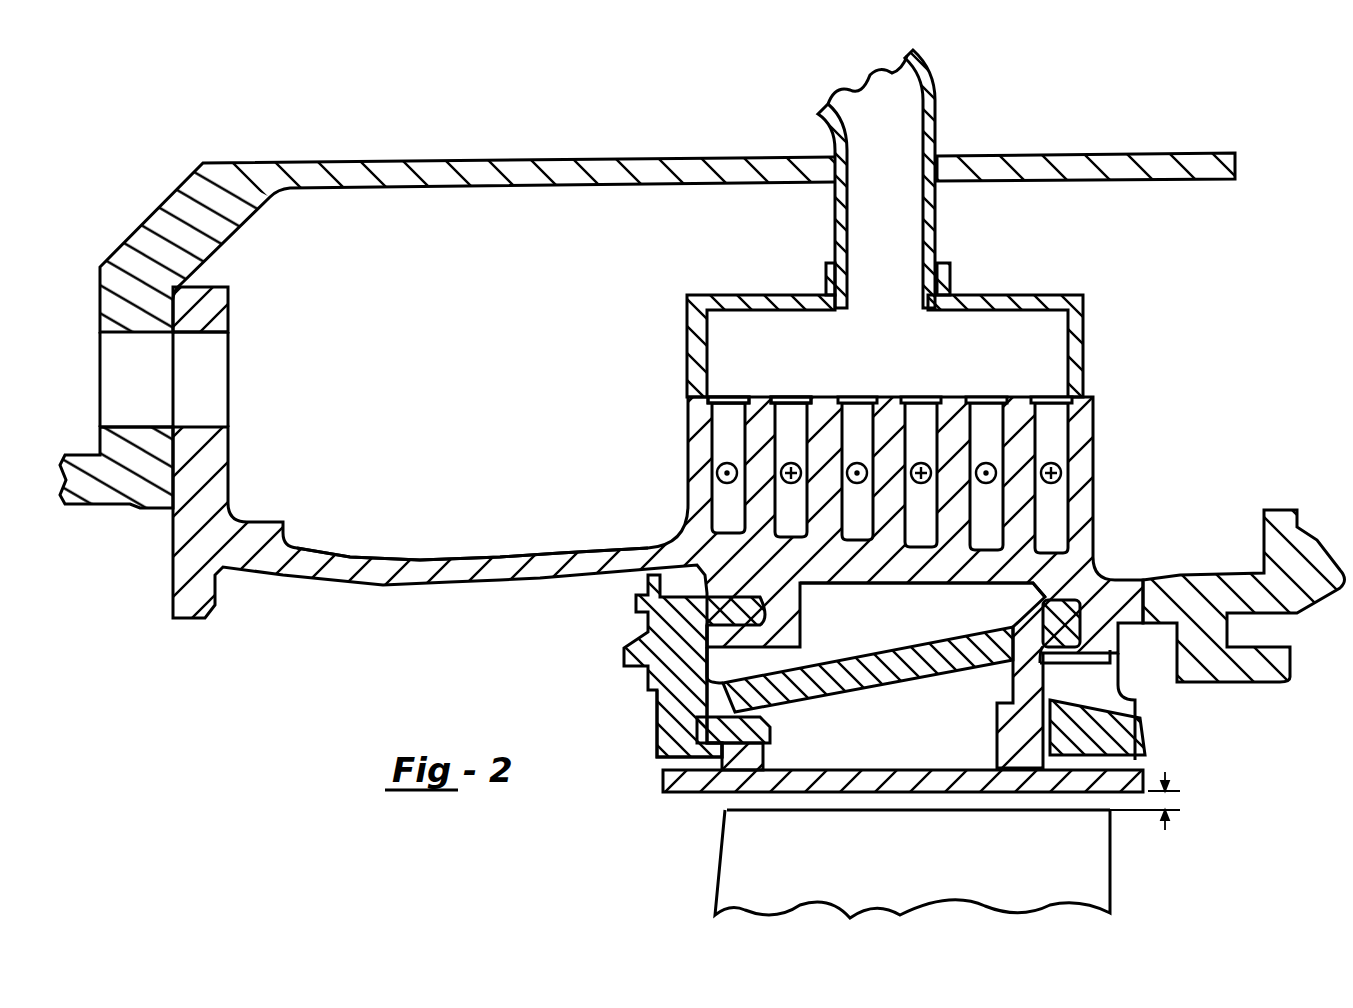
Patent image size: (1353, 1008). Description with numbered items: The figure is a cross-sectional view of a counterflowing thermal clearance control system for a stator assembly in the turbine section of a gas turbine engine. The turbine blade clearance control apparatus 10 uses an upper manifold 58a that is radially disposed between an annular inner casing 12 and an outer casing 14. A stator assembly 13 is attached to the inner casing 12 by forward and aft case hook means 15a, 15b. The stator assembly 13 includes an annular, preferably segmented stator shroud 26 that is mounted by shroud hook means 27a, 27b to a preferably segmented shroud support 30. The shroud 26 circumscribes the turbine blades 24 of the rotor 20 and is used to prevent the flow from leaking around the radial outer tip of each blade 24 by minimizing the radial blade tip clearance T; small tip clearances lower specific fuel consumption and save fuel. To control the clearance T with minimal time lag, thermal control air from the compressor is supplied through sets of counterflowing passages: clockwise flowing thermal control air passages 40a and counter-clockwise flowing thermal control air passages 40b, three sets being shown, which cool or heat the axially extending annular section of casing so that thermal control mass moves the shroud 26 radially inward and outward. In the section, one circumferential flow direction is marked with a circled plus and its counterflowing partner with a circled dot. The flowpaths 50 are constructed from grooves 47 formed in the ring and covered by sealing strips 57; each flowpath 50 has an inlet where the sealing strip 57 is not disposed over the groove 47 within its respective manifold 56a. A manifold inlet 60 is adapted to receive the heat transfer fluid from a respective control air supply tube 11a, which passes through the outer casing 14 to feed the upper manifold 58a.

The turbine blade clearance control apparatus 10 is at (679, 404).
The control air supply tube 11a is at (937, 140).
The inner casing 12 is at (430, 587).
The stator assembly 13 is at (642, 616).
The outer casing 14 is at (630, 157).
The forward case hook means 15a is at (755, 655).
The aft case hook means 15b is at (1123, 652).
The rotor 20 is at (717, 862).
The turbine blades 24 is at (910, 867).
The stator shroud 26 is at (697, 797).
The shroud hook means 27a is at (752, 740).
The shroud hook means 27b is at (1140, 735).
The shroud support 30 is at (657, 720).
The clockwise flowing thermal control air passages 40a is at (993, 428).
The counter-clockwise flowing thermal control air passages 40b is at (787, 520).
The grooves 47 is at (800, 583).
The flowpaths 50 is at (730, 420).
The manifold 56a is at (990, 356).
The sealing strips 57 is at (788, 400).
The upper manifold 58a is at (727, 295).
The manifold inlet 60 is at (950, 276).
The radial blade tip clearance T is at (1172, 800).